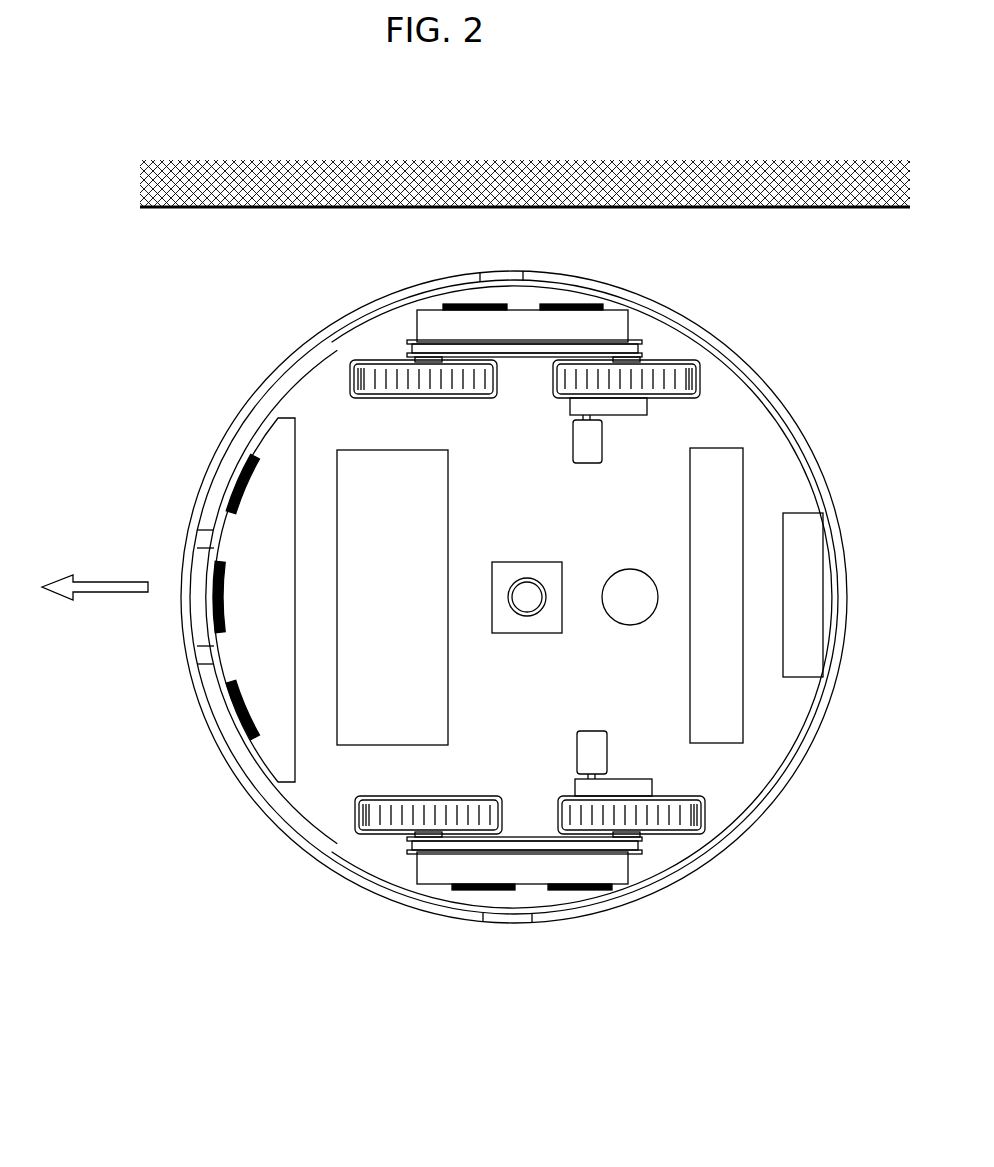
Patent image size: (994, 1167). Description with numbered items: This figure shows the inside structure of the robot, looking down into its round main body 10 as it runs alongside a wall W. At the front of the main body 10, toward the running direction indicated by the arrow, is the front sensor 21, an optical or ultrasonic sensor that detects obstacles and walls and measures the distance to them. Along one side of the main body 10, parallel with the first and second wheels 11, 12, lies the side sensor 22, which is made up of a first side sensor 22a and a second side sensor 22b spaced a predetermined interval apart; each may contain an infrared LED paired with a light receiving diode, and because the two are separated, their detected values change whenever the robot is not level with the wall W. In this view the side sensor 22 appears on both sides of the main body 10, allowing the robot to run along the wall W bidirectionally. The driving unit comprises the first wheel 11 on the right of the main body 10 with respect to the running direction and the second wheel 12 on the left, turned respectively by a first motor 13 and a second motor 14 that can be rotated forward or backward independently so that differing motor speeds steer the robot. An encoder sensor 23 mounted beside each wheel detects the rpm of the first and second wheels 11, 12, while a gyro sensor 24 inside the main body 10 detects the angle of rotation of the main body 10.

The main body 10 is at (170, 379).
The first wheel 11 is at (692, 383).
The second wheel 12 is at (698, 812).
The first motor 13 is at (596, 445).
The second motor 14 is at (598, 751).
The front sensor 21 is at (240, 637).
The side sensor 22 is at (628, 327).
The first side sensor 22a is at (458, 306).
The second side sensor 22b is at (590, 306).
The encoder sensor 23 is at (647, 407).
The gyro sensor 24 is at (641, 601).
The wall W is at (785, 207).